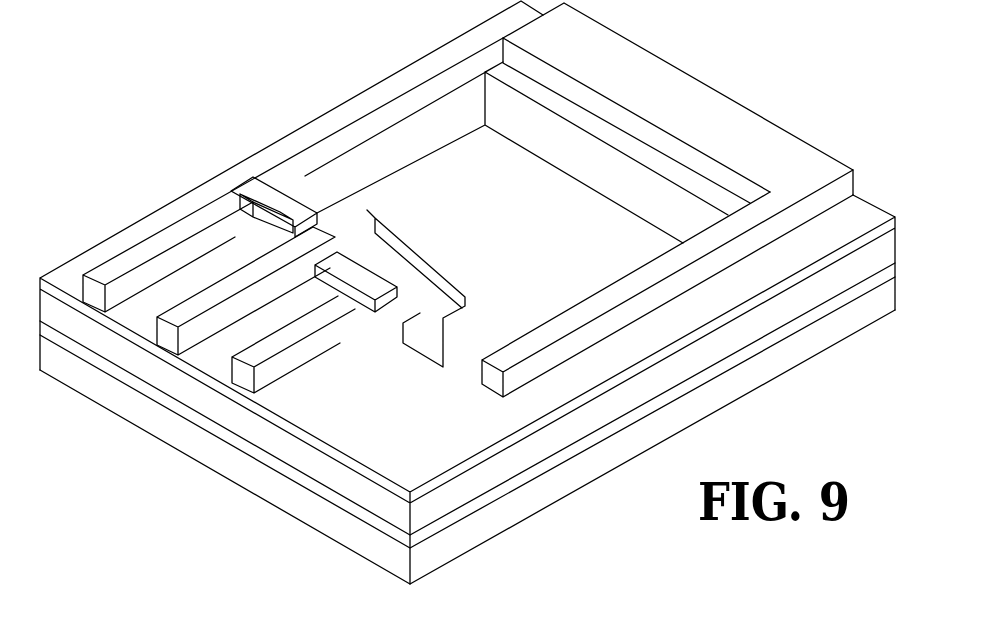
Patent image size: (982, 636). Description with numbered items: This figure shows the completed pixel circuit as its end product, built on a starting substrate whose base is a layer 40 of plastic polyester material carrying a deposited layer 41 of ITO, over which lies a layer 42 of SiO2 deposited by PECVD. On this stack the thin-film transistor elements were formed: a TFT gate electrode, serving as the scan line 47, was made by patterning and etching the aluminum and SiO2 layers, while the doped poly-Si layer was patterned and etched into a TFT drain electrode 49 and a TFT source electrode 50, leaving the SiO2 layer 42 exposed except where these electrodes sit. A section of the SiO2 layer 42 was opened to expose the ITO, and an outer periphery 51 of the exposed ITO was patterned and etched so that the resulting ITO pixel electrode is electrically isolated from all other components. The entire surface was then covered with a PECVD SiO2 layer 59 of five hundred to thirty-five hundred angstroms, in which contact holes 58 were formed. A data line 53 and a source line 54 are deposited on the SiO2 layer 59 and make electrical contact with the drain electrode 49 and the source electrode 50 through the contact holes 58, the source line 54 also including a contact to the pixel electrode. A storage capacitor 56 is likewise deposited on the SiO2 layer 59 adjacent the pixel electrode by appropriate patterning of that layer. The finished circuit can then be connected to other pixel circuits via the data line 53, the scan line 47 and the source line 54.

The layer of plastic material 40 is at (357, 535).
The layer of ITO 41 is at (318, 490).
The layer of SiO2 42 is at (272, 440).
The TFT gate electrode (scan line) 47 is at (380, 208).
The TFT drain electrode 49 is at (263, 240).
The TFT source electrode 50 is at (337, 282).
The outer periphery of the exposed ITO layer 51 is at (437, 147).
The data line 53 is at (138, 230).
The source line 54 is at (324, 356).
The storage capacitor 56 is at (672, 90).
The contact holes 58 is at (470, 365).
The PECVD SiO2 layer 59 is at (440, 451).